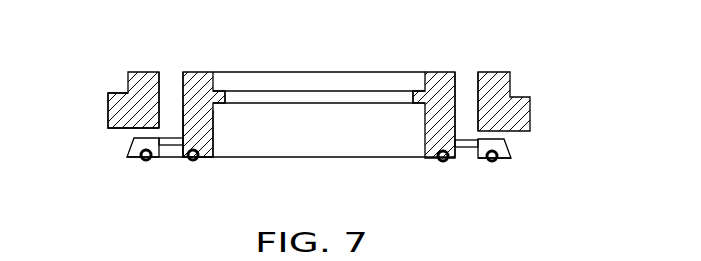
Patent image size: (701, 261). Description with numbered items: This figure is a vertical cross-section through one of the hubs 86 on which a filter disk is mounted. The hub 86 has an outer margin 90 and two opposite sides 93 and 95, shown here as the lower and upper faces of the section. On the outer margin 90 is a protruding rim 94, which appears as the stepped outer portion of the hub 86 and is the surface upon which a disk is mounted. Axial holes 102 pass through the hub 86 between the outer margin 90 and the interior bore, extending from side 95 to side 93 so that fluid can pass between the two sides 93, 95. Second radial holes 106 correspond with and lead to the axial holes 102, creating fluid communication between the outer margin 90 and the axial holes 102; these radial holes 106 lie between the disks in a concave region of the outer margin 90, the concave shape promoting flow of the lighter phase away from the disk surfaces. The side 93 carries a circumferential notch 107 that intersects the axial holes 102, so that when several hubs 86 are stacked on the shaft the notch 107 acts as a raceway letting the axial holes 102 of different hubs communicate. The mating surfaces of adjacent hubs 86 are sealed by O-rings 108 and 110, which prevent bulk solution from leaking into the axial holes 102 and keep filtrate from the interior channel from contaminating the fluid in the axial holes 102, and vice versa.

The hub 86 is at (128, 80).
The protruding rim 94 is at (108, 118).
The side 95 is at (207, 71).
The side 93 is at (207, 158).
The axial holes 102 is at (172, 71).
The outer margin 90 is at (510, 80).
The second radial holes 106 is at (136, 136).
The circumferential notch 107 is at (167, 145).
The sealing O-ring 110 is at (442, 162).
The sealing O-ring 108 is at (492, 162).